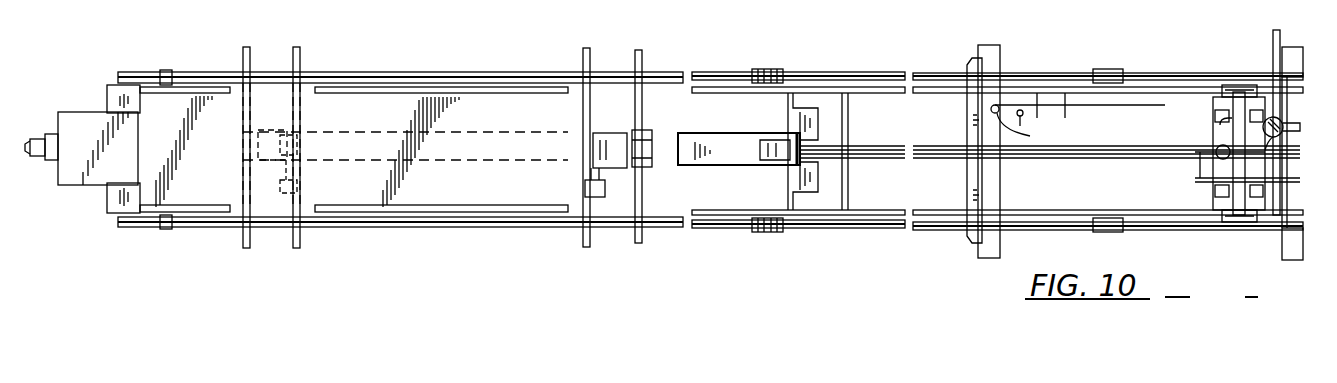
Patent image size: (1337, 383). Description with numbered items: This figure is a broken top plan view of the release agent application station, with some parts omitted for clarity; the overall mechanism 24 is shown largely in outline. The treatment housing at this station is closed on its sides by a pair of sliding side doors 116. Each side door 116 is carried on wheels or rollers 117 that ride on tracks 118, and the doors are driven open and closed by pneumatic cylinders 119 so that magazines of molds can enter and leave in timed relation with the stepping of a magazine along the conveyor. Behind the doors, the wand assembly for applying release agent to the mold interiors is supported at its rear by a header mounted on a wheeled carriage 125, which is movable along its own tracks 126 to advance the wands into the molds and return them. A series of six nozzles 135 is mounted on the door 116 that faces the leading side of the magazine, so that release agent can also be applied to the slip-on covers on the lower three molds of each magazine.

The carriage assembly 24 is at (456, 240).
The sliding side door 116 is at (850, 88).
The wheels or rollers 117 is at (775, 52).
The tracks 118 is at (827, 77).
The pneumatic cylinder 119 is at (583, 72).
The wheeled carriage 125 is at (1208, 193).
The tracks 126 is at (1208, 88).
The nozzles 135 is at (1078, 118).